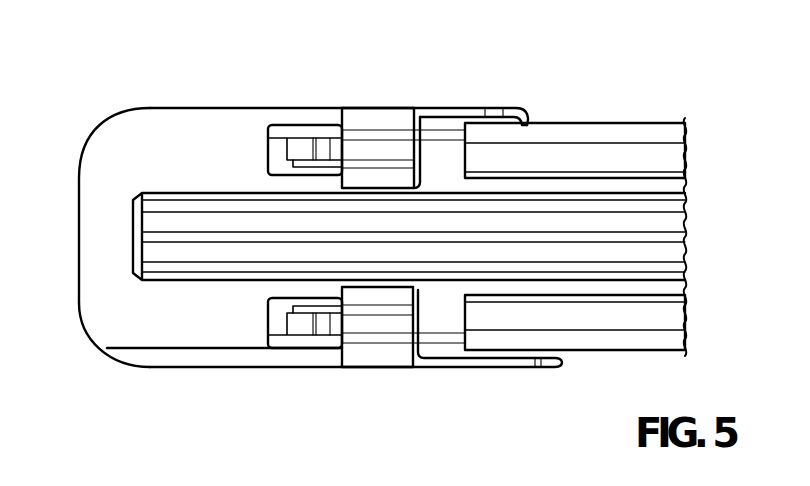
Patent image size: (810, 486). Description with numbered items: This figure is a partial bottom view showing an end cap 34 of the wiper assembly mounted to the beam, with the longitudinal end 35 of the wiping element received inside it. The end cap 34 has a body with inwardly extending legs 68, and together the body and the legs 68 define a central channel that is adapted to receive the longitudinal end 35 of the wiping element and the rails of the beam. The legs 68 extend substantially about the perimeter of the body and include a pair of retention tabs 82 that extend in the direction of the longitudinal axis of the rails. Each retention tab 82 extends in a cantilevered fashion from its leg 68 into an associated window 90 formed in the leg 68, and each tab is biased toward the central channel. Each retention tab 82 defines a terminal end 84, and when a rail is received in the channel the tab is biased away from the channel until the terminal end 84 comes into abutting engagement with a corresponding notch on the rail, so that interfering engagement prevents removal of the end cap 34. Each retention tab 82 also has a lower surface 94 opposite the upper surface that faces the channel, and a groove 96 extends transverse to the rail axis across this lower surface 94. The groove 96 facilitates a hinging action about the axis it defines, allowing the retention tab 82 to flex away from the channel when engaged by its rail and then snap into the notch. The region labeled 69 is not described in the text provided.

The end cap 34 is at (103, 95).
The longitudinal end 35 is at (142, 230).
The inwardly extending leg 68 is at (196, 120).
The cover end wall 69 is at (105, 330).
The retention tab 82 is at (319, 100).
The terminal end 84 is at (286, 145).
The window 90 is at (280, 130).
The lower surface 94 is at (327, 328).
The groove 96 is at (321, 143).